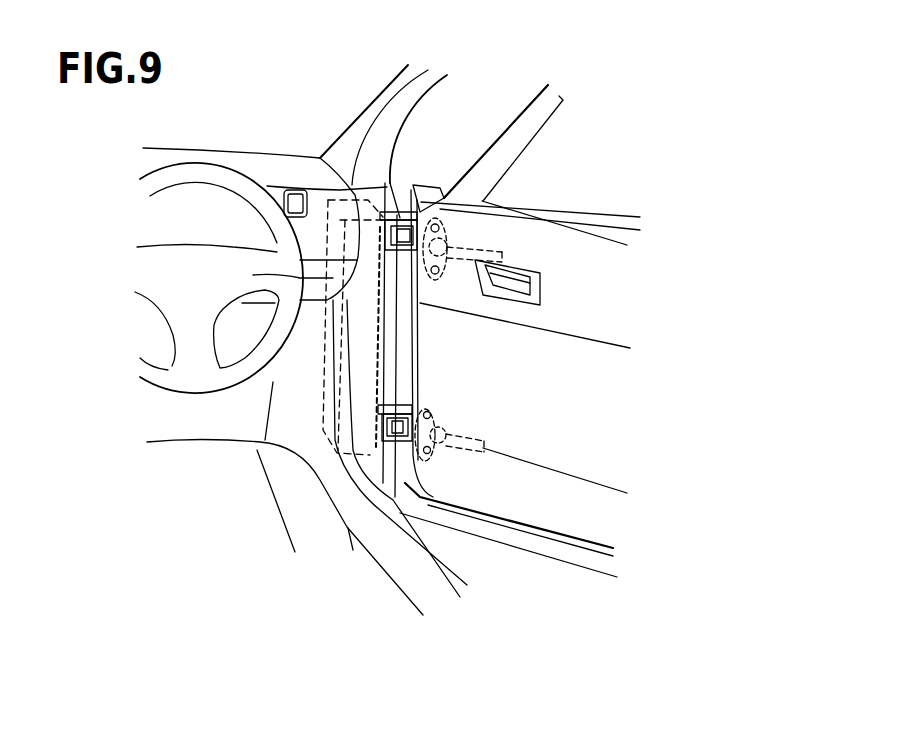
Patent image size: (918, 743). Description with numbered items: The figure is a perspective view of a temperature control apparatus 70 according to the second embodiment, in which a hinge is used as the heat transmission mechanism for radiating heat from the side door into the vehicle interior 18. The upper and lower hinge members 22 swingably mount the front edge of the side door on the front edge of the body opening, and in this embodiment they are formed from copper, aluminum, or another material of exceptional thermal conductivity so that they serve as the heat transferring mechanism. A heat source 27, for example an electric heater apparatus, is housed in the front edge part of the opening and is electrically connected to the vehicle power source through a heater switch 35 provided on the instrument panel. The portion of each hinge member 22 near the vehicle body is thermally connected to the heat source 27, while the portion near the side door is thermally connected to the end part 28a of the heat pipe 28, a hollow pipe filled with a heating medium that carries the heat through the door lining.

The temperature control apparatus 70 is at (272, 126).
The heater switch 35 is at (297, 194).
The hinge member 22 is at (398, 216).
The end part 28a is at (451, 247).
The heat pipe 28 is at (469, 249).
The heat source 27 is at (253, 275).
The vehicle interior 18 is at (194, 484).